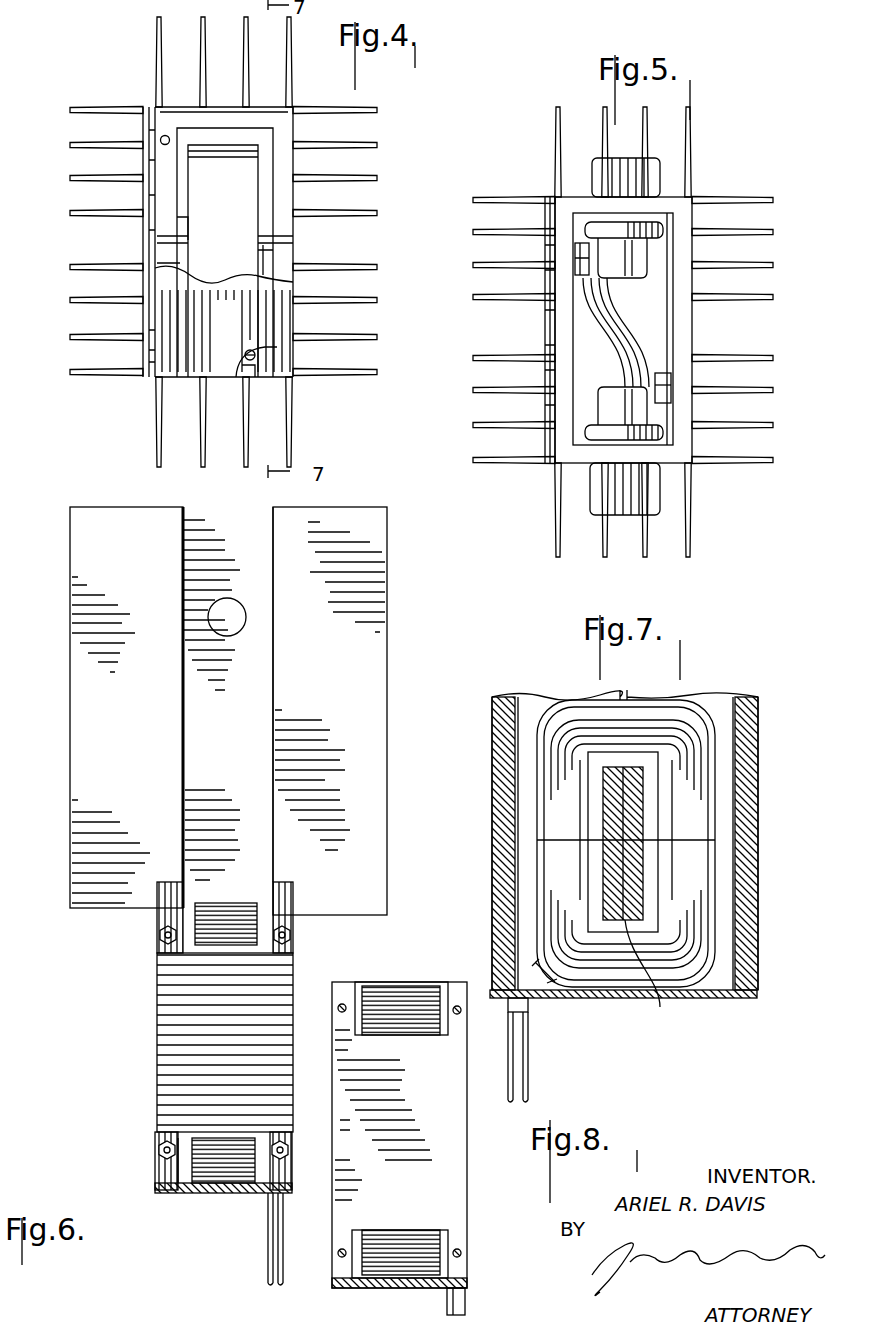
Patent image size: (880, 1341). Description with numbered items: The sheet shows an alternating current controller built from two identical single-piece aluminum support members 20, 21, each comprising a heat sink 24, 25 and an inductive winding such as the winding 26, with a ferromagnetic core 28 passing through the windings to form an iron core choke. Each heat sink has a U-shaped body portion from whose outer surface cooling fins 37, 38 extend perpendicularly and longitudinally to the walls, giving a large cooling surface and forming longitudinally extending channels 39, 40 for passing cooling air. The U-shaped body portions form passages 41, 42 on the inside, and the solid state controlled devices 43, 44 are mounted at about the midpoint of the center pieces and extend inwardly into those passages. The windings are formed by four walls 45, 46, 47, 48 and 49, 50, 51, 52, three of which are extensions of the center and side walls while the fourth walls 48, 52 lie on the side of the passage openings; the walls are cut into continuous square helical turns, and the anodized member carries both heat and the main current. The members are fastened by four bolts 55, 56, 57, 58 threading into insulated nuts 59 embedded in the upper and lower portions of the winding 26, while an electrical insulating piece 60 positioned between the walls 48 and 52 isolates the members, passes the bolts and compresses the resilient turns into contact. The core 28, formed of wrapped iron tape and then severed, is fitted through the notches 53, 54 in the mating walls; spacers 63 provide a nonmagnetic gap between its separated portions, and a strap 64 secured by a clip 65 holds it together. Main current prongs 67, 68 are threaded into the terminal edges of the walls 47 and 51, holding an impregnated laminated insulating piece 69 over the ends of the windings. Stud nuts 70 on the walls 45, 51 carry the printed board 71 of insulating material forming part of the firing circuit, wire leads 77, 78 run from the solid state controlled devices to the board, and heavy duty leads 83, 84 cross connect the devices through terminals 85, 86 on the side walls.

In FIG. 4, the support member 20 is at (297, 394).
In FIG. 5, the support member 20 is at (716, 160).
In FIG. 6, the support member 20 is at (404, 570).
In FIG. 7, the support member 20 is at (771, 712).
In FIG. 8, the support member 20 is at (433, 983).
In FIG. 4, the support member 21 is at (296, 101).
In FIG. 5, the support member 21 is at (698, 475).
In FIG. 7, the support member 21 is at (481, 710).
In FIG. 5, the heat sink 24 is at (562, 203).
In FIG. 6, the heat sink 24 is at (163, 506).
In FIG. 5, the heat sink 25 is at (677, 470).
In FIG. 6, the inductive winding 26 is at (157, 1037).
In FIG. 7, the inductive winding 26 is at (760, 905).
In FIG. 4, the ferromagnetic core 28 is at (235, 272).
In FIG. 6, the ferromagnetic core 28 is at (215, 1180).
In FIG. 7, the ferromagnetic core 28 is at (593, 718).
In FIG. 8, the ferromagnetic core 28 is at (392, 990).
In FIG. 4, the cooling fin 37 is at (374, 302).
In FIG. 5, the cooling fin 37 is at (765, 241).
In FIG. 6, the cooling fin 37 is at (68, 830).
In FIG. 4, the cooling fin 38 is at (378, 110).
In FIG. 5, the cooling fin 38 is at (765, 392).
In FIG. 4, the channel 39 is at (365, 360).
In FIG. 5, the channel 39 is at (763, 218).
In FIG. 4, the channel 40 is at (372, 165).
In FIG. 5, the channel 40 is at (760, 413).
In FIG. 4, the passage 41 is at (245, 352).
In FIG. 5, the passage 41 is at (663, 297).
In FIG. 6, the passage 41 is at (262, 520).
In FIG. 7, the passage 41 is at (725, 710).
In FIG. 4, the passage 42 is at (190, 128).
In FIG. 5, the passage 42 is at (585, 412).
In FIG. 7, the passage 42 is at (515, 698).
In FIG. 5, the solid state controlled device 43 is at (645, 248).
In FIG. 5, the solid state controlled device 44 is at (600, 436).
In FIG. 4, the wall 45 is at (165, 262).
In FIG. 6, the wall 45 is at (160, 1170).
In FIG. 7, the wall 45 is at (700, 698).
In FIG. 4, the wall 46 is at (243, 365).
In FIG. 7, the wall 46 is at (760, 738).
In FIG. 4, the wall 47 is at (283, 276).
In FIG. 6, the wall 47 is at (278, 1180).
In FIG. 4, the wall 48 is at (178, 252).
In FIG. 4, the wall 49 is at (283, 138).
In FIG. 7, the wall 49 is at (527, 700).
In FIG. 4, the wall 50 is at (218, 115).
In FIG. 7, the wall 50 is at (492, 745).
In FIG. 4, the wall 51 is at (162, 191).
In FIG. 4, the wall 52 is at (262, 233).
In FIG. 6, the notch 53 is at (258, 903).
In FIG. 7, the notch 53 is at (638, 762).
In FIG. 7, the notch 54 is at (612, 760).
In FIG. 6, the bolt 55 is at (292, 927).
In FIG. 8, the bolt 55 is at (456, 1015).
In FIG. 6, the bolt 56 is at (160, 935).
In FIG. 8, the bolt 56 is at (338, 1008).
In FIG. 6, the bolt 57 is at (285, 1148).
In FIG. 8, the bolt 57 is at (462, 1250).
In FIG. 6, the bolt 58 is at (160, 1150).
In FIG. 8, the bolt 58 is at (338, 1253).
In FIG. 6, the insulated nut 59 is at (160, 927).
In FIG. 4, the electrical insulating piece 60 is at (162, 233).
In FIG. 6, the electrical insulating piece 60 is at (227, 617).
In FIG. 7, the electrical insulating piece 60 is at (656, 975).
In FIG. 8, the electrical insulating piece 60 is at (455, 1140).
In FIG. 7, the spacer 63 is at (717, 840).
In FIG. 7, the strap 64 is at (700, 977).
In FIG. 7, the clip 65 is at (575, 998).
In FIG. 4, the main current prong 67 is at (260, 336).
In FIG. 6, the main current prong 67 is at (265, 1230).
In FIG. 8, the main current prong 67 is at (464, 1300).
In FIG. 4, the main current prong 68 is at (163, 144).
In FIG. 7, the main current prong 68 is at (528, 1065).
In FIG. 4, the impregnated laminated insulating piece 69 is at (270, 300).
In FIG. 6, the impregnated laminated insulating piece 69 is at (178, 1193).
In FIG. 4, the stud nut 70 is at (148, 131).
In FIG. 4, the printed board 71 is at (140, 362).
In FIG. 5, the printed board 71 is at (545, 213).
In FIG. 5, the wire lead 77 is at (628, 312).
In FIG. 5, the wire lead 78 is at (633, 358).
In FIG. 5, the heavy duty lead 83 is at (650, 350).
In FIG. 5, the heavy duty lead 84 is at (590, 329).
In FIG. 5, the terminal 85 is at (588, 254).
In FIG. 5, the terminal 86 is at (665, 397).